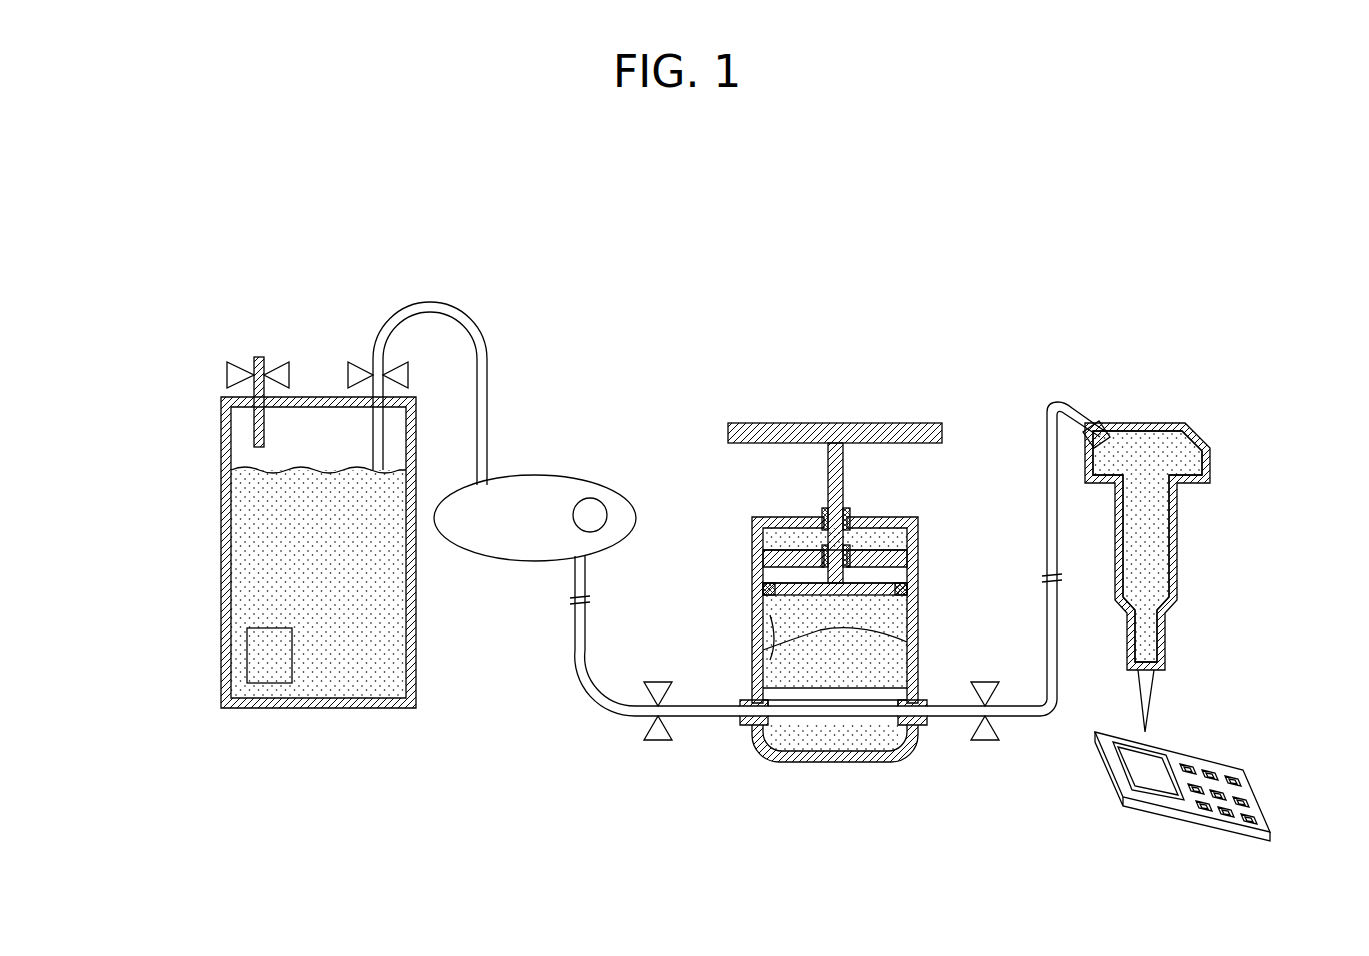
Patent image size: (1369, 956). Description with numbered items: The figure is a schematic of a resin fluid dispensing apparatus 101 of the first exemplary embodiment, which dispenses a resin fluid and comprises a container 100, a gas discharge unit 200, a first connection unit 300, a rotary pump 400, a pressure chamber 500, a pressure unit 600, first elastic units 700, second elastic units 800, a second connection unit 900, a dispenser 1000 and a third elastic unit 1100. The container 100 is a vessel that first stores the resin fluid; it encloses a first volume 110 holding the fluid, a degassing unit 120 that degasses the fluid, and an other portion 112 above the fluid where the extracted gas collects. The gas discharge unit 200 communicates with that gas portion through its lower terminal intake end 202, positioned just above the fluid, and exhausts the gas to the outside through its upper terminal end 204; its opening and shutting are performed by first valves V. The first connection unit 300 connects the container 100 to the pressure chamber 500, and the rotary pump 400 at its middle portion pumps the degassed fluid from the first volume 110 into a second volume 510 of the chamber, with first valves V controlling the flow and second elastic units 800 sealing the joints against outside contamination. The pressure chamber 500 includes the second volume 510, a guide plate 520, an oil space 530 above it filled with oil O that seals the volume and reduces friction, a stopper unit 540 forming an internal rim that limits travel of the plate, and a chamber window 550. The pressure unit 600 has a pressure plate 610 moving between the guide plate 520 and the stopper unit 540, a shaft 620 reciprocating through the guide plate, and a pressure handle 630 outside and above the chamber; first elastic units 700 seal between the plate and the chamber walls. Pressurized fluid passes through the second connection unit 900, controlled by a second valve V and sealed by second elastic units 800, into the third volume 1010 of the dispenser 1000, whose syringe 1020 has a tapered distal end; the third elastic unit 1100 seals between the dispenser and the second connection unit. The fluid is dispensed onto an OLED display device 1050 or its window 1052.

The resin fluid dispensing apparatus 101 is at (722, 222).
The container 100 is at (269, 586).
The first volume 110 is at (272, 586).
The other portion of the container 112 is at (238, 418).
The degassing unit 120 is at (247, 645).
The gas discharge unit 200 is at (213, 376).
The lower terminal intake end 202 is at (254, 446).
The upper terminal end 204 is at (259, 356).
The first connection unit 300 is at (487, 365).
The rotary pump 400 is at (565, 480).
The pressure chamber 500 is at (895, 662).
The second volume 510 is at (907, 595).
The guide plate 520 is at (907, 567).
The oil space 530 is at (907, 540).
The stopper unit 540 is at (876, 675).
The chamber window 550 is at (907, 642).
The pressure unit 600 is at (777, 509).
The pressure plate 610 is at (775, 585).
The shaft 620 is at (828, 520).
The pressure handle 630 is at (728, 438).
The first elastic units 700 is at (752, 590).
The second elastic units 800 is at (748, 730).
The second connection unit 900 is at (1040, 720).
The dispenser 1000 is at (1207, 541).
The third volume 1010 is at (1153, 458).
The syringe 1020 is at (1177, 565).
The OLED display device 1050 is at (1232, 777).
The window 1052 is at (1150, 765).
The third elastic unit 1100 is at (1097, 425).
The valves V is at (370, 365).
The oil O is at (880, 527).